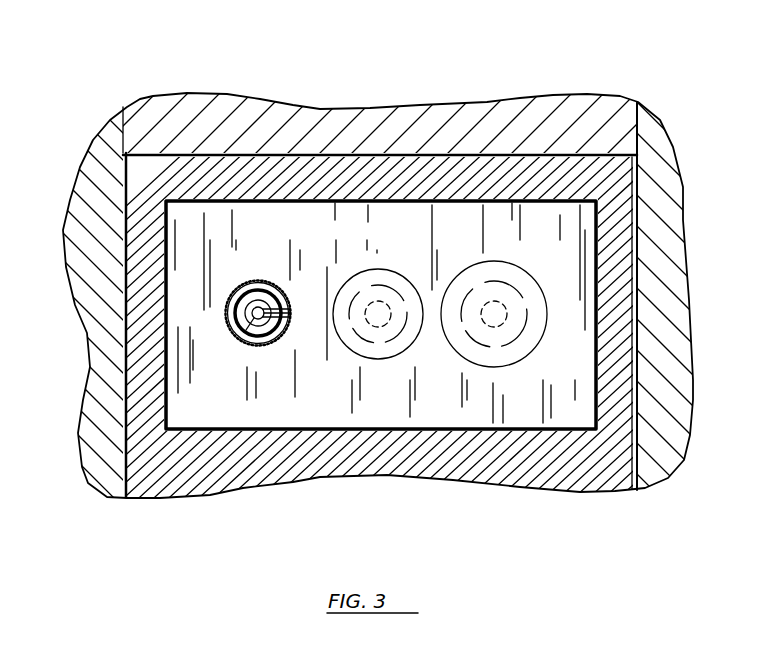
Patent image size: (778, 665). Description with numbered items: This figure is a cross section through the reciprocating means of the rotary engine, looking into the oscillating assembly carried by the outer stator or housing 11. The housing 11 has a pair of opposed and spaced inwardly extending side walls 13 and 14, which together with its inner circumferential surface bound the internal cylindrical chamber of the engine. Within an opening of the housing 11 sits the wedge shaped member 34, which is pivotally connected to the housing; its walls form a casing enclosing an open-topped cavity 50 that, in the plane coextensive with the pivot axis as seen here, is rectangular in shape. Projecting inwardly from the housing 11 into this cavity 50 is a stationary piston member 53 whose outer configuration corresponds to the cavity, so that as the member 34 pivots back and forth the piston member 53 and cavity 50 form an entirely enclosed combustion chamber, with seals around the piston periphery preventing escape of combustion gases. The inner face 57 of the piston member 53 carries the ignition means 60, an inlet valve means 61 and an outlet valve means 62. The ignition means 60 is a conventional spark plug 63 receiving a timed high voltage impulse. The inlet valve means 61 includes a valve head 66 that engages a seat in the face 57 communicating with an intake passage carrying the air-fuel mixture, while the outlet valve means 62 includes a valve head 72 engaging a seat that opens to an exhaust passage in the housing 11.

The housing 11 is at (552, 102).
The side wall 13 is at (91, 191).
The side wall 14 is at (673, 184).
The wedge shaped member 34 is at (596, 470).
The cavity 50 is at (555, 162).
The stationary piston member 53 is at (466, 152).
The inner face 57 is at (327, 402).
The ignition means 60 is at (272, 360).
The inlet valve means 61 is at (383, 368).
The outlet valve means 62 is at (512, 378).
The spark plug 63 is at (243, 340).
The valve head 66 is at (402, 338).
The valve head 72 is at (487, 347).